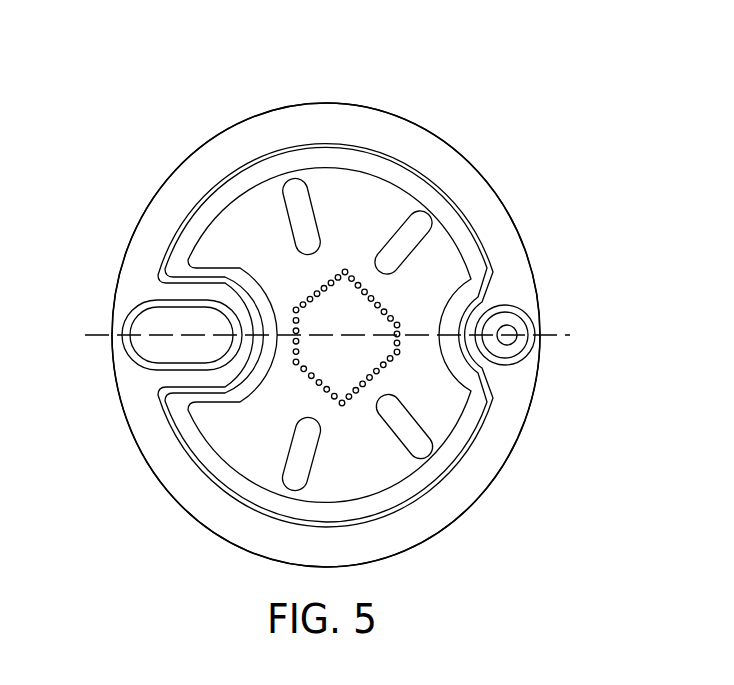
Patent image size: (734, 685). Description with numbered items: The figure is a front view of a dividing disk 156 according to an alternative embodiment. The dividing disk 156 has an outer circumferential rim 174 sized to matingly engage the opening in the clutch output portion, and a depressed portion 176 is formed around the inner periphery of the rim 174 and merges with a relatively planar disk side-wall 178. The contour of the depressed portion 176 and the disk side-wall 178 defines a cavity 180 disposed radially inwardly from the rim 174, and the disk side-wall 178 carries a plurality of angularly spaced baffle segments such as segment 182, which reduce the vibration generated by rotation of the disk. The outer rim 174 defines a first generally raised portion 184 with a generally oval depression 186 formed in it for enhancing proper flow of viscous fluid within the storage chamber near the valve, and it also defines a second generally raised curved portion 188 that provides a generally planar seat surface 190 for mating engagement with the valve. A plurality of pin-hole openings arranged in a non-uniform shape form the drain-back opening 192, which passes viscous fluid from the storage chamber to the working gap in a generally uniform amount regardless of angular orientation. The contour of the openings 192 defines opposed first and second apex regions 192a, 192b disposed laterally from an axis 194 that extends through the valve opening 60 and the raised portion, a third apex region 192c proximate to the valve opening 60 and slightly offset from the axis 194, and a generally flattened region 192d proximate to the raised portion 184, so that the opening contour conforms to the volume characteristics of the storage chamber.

The valve opening 60 is at (510, 330).
The dividing disk 156 is at (583, 172).
The outer circumferential rim 174 is at (217, 152).
The depressed portion 176 is at (202, 223).
The disk side-wall 178 is at (260, 247).
The cavity 180 is at (268, 196).
The baffle segment 182 is at (316, 196).
The first generally raised portion 184 is at (128, 295).
The generally oval depression 186 is at (130, 362).
The second generally raised curved portion 188 is at (483, 305).
The generally planar seat surface 190 is at (497, 353).
The drain-back opening 192 is at (372, 222).
The first apex region 192a is at (353, 257).
The second apex region 192b is at (352, 410).
The third apex region 192c is at (400, 347).
The generally flattened region 192d is at (283, 371).
The axis 194 is at (562, 347).